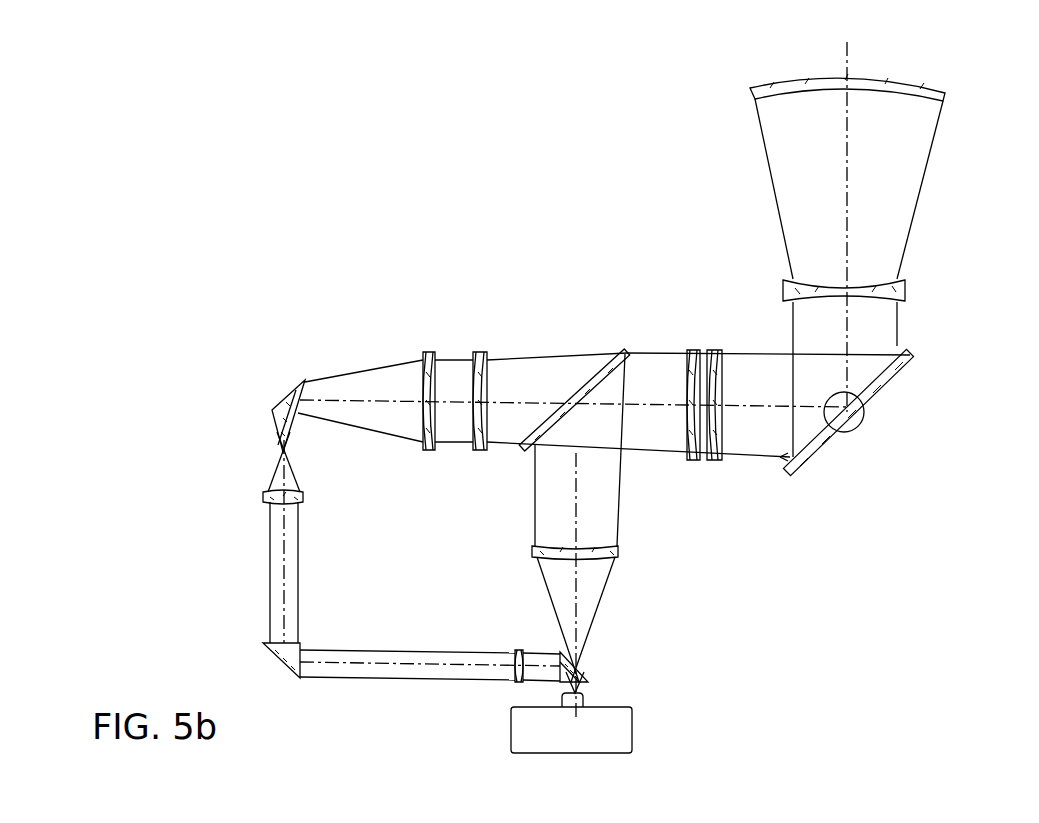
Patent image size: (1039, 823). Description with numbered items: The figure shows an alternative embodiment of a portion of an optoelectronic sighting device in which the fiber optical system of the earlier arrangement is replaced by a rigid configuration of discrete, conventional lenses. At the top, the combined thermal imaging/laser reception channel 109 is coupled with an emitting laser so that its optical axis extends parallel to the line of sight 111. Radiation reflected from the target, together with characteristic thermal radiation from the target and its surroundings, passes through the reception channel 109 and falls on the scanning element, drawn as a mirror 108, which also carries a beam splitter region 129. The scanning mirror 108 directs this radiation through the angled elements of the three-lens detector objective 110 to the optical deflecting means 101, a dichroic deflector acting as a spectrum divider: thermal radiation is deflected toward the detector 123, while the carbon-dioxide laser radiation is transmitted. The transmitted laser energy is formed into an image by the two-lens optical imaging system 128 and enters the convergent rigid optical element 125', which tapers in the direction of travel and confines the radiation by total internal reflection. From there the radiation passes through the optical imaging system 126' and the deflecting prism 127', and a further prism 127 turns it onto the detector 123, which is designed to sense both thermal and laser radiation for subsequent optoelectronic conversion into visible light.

The line of sight 111 is at (847, 54).
The combined thermal imaging/laser reception channel 109 is at (955, 93).
The scanning mirror 108 is at (910, 355).
The beam splitter with aperture 129 is at (861, 425).
The dichroic deflector 101 is at (623, 350).
The three-lens detector objective 110 is at (723, 468).
The two-lens optical imaging system 128 is at (487, 343).
The convergent rigid optical element 125' is at (284, 355).
The optical imaging system 126' is at (393, 586).
The deflecting prism 127' is at (299, 690).
The deflecting prism 127 is at (624, 662).
The detector 123 is at (623, 745).